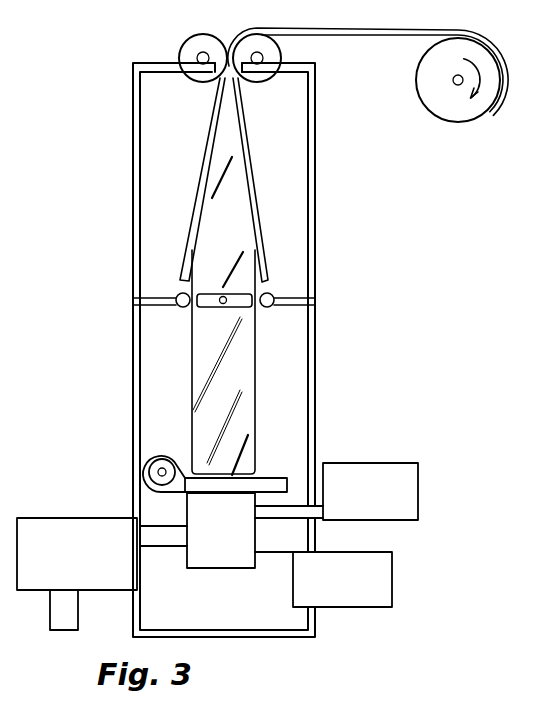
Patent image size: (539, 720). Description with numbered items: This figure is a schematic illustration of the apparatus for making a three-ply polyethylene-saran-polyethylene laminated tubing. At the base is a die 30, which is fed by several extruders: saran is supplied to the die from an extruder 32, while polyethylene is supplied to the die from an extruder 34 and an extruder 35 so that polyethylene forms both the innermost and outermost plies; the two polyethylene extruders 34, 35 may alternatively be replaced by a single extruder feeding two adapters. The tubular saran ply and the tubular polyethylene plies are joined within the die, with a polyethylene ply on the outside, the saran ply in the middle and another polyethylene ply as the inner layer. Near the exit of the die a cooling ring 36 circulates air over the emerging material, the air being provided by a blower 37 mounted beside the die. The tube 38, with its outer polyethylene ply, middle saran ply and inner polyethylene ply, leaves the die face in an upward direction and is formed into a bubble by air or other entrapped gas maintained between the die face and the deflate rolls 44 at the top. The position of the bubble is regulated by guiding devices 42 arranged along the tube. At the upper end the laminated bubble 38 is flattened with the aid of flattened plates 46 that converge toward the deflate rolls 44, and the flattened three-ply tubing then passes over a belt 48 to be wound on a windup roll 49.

The die 30 is at (229, 569).
The extruder 32 is at (80, 528).
The extruder 34 is at (385, 560).
The extruder 35 is at (410, 512).
The cooling ring 36 is at (291, 480).
The blower 37 is at (150, 472).
The tube 38 is at (258, 370).
The guiding devices 42 is at (270, 296).
The deflate rolls 44 is at (246, 43).
The flattened plates 46 is at (248, 134).
The drive belt 48 is at (367, 38).
The windup roll 49 is at (493, 108).